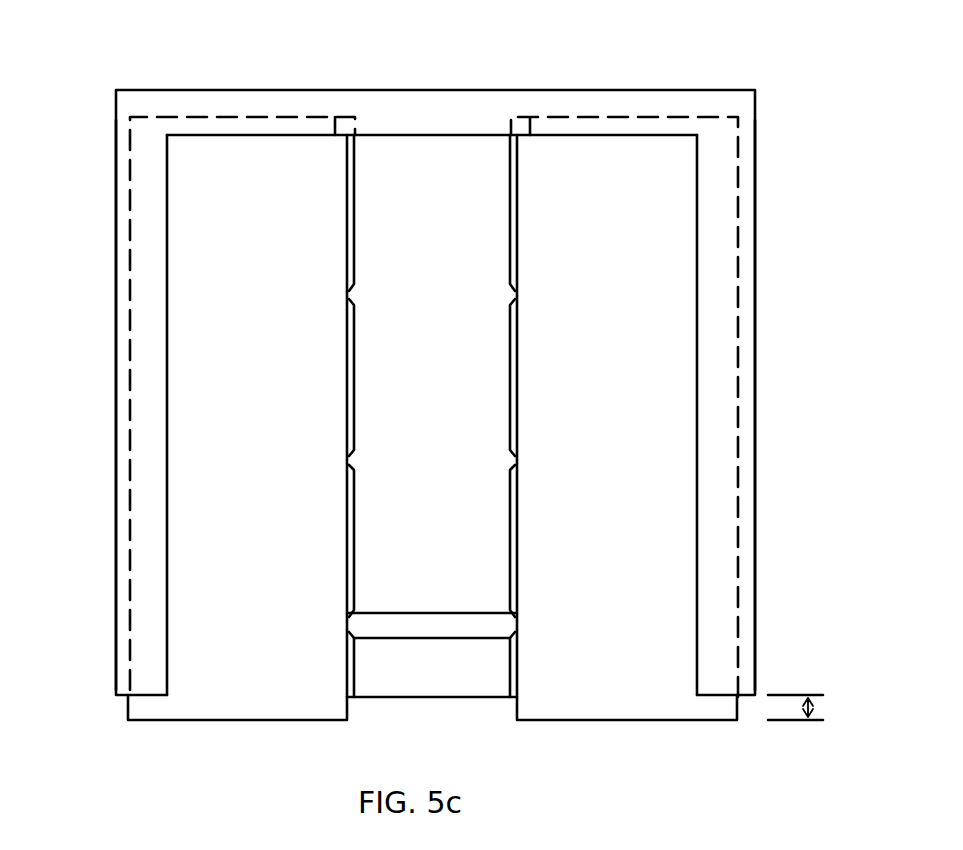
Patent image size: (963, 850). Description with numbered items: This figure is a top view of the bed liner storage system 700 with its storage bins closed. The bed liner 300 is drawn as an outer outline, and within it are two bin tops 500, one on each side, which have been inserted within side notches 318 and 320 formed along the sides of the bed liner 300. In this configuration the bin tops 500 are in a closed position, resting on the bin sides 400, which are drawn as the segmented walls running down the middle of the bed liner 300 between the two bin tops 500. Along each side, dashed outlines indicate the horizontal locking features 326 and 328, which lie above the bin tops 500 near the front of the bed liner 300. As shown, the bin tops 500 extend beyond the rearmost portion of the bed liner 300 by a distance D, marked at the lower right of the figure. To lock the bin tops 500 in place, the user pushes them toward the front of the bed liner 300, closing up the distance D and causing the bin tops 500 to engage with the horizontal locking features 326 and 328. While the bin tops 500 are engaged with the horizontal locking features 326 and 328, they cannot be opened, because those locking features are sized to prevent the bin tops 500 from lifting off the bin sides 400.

The bed liner storage system 700 is at (572, 55).
The bed liner 300 is at (423, 88).
The side notch 318 is at (740, 430).
The side notch 320 is at (128, 376).
The horizontal locking feature 326 is at (600, 118).
The horizontal locking feature 328 is at (242, 113).
The bin top 500 is at (213, 207).
The bin side 400 is at (507, 363).
The distance D is at (809, 711).